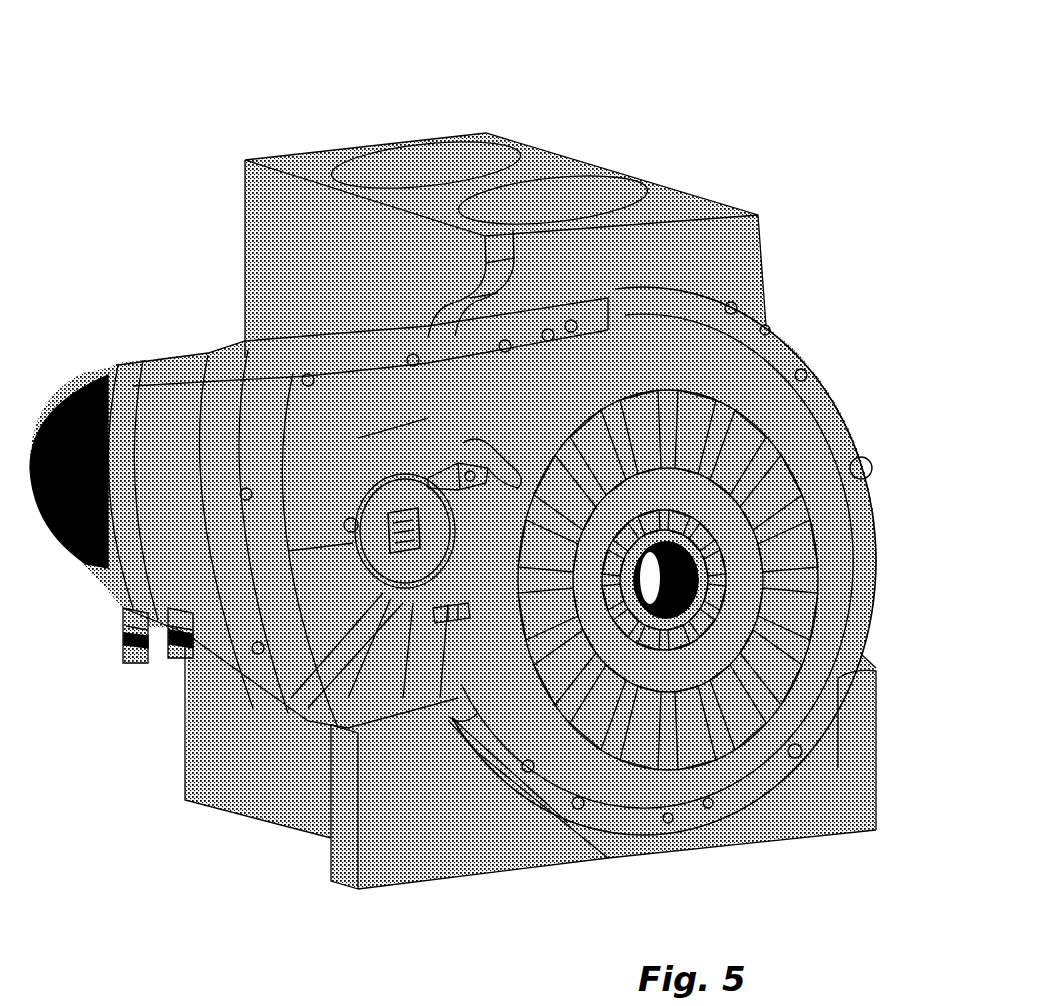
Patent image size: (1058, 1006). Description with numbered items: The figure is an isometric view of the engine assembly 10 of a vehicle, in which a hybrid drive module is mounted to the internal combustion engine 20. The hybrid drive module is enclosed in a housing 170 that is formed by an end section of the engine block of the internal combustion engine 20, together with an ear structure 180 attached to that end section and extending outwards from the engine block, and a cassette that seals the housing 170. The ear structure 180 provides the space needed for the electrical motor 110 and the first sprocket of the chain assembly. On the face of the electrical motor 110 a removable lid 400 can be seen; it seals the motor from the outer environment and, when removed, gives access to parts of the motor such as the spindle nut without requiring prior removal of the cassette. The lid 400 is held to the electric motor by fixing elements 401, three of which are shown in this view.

The engine assembly 10 is at (453, 459).
The internal combustion engine 20 is at (683, 146).
The electrical motor 110 is at (60, 620).
The housing 170 is at (834, 342).
The ear structure 180 is at (316, 365).
The removable lid 400 is at (425, 532).
The fixing elements 401 is at (462, 462).